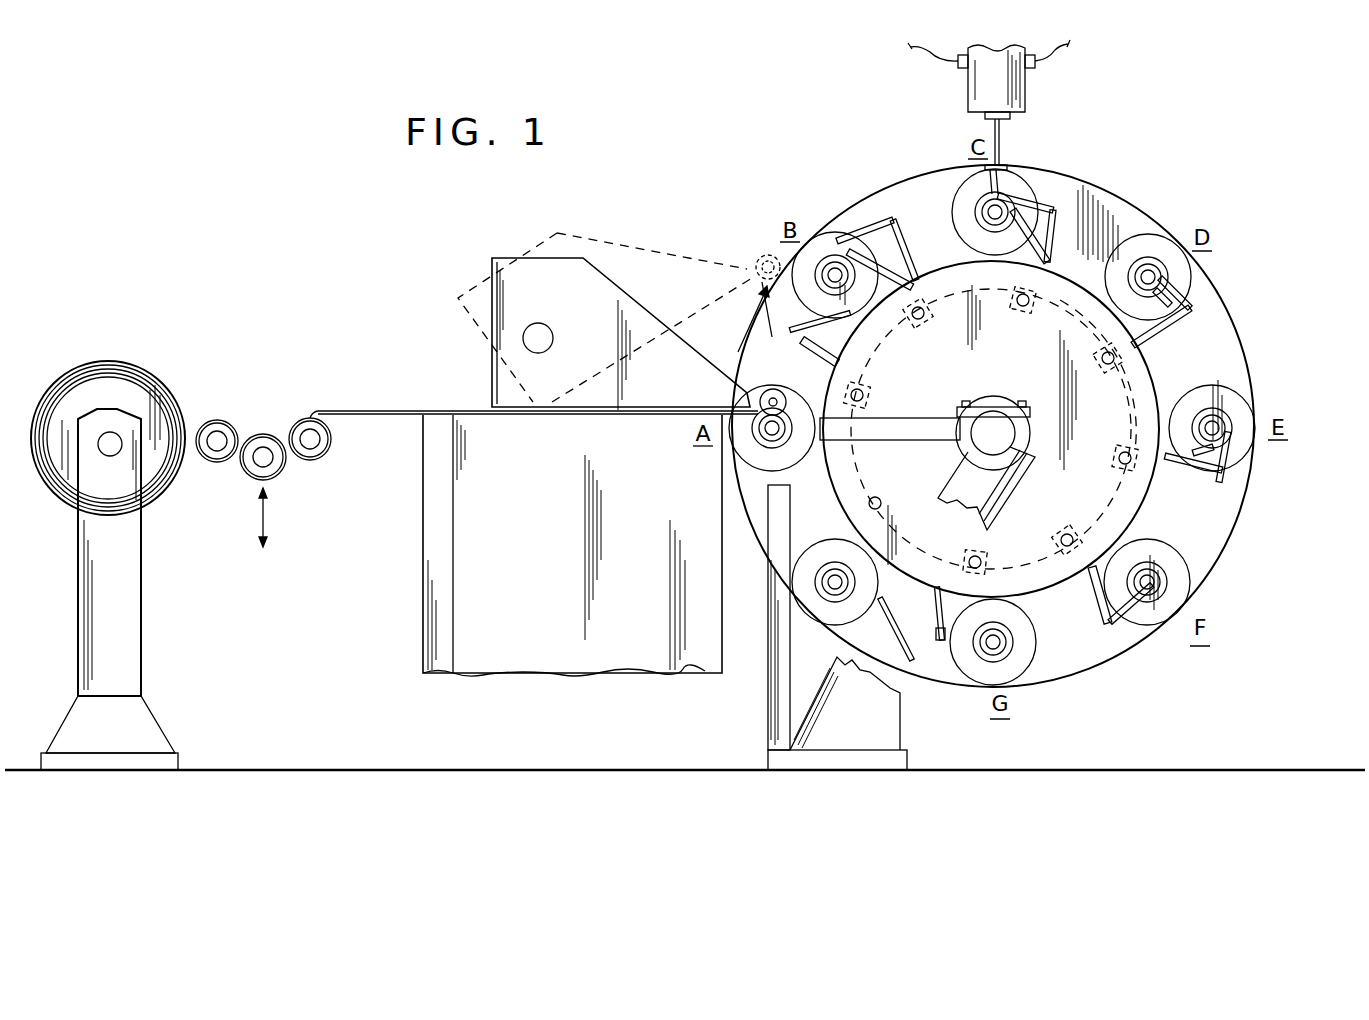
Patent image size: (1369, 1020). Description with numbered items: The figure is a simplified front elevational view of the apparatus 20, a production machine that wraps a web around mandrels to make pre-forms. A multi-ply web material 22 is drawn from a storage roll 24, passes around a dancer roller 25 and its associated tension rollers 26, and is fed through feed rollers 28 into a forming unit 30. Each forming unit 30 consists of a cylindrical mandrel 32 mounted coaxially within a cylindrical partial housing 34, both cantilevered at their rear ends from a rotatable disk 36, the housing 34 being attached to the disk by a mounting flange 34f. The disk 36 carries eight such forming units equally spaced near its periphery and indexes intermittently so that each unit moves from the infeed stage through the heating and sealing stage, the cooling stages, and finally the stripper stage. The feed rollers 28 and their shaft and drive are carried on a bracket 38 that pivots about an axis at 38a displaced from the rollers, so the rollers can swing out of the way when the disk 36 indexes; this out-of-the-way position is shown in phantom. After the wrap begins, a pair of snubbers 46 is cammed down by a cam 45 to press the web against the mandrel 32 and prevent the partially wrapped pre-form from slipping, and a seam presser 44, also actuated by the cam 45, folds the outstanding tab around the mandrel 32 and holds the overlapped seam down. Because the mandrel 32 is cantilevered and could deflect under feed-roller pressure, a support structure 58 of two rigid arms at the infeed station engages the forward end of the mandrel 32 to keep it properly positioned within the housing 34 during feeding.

The apparatus 20 is at (1141, 172).
The web material 22 is at (405, 408).
The storage roll 24 is at (136, 364).
The dancer roller 25 is at (263, 433).
The tension rollers 26 is at (216, 462).
The feed rollers 28 is at (758, 258).
The forming unit 30 is at (772, 450).
The mandrel 32 is at (990, 222).
The housing 34 is at (972, 228).
The mounting flange 34f is at (1240, 405).
The disk 36 is at (1222, 325).
The bracket 38 is at (516, 262).
The pivot axis 38a is at (550, 333).
The seam presser 44 is at (858, 238).
The cam 45 is at (872, 484).
The snubbers 46 is at (900, 270).
The support structure 58 is at (770, 612).